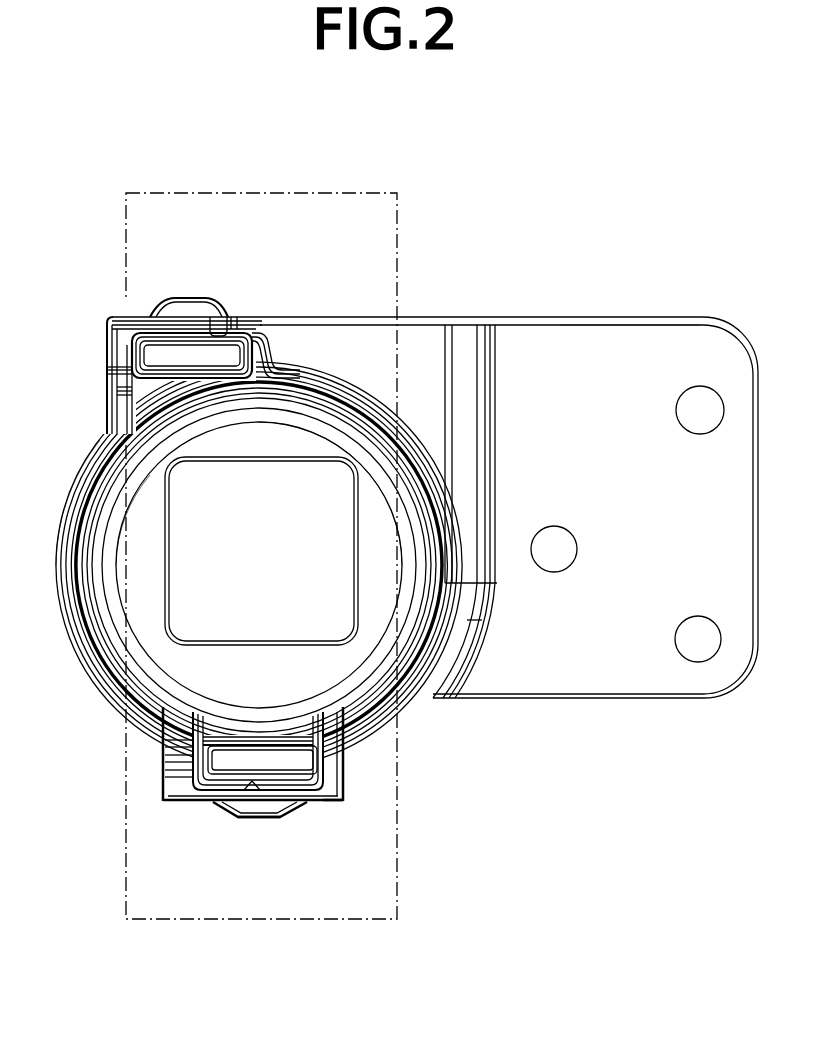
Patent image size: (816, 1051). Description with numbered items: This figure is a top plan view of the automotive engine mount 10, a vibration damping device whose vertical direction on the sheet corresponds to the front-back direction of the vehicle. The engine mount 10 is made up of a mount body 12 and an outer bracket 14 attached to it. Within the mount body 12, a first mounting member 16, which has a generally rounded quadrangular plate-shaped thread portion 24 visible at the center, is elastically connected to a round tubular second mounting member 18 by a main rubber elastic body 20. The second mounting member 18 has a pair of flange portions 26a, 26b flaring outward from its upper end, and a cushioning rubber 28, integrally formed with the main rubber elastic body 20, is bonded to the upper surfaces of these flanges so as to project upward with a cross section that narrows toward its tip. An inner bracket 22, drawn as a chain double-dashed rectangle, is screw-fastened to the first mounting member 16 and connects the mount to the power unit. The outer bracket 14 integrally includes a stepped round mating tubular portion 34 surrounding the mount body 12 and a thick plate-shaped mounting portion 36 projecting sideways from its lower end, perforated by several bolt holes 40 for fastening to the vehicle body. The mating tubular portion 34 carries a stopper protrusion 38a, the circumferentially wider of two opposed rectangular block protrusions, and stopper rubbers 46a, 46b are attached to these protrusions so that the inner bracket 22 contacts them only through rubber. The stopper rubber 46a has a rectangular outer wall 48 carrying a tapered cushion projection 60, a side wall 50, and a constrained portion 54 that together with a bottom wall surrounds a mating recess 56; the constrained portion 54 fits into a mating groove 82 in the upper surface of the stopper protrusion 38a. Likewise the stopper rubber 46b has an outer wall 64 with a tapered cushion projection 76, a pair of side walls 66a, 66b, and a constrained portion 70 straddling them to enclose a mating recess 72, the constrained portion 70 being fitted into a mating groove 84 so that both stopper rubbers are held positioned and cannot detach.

The engine mount 10 is at (590, 237).
The mount body 12 is at (72, 566).
The outer bracket 14 is at (655, 702).
The first mounting member 16 is at (313, 653).
The second mounting member 18 is at (420, 438).
The main rubber elastic body 20 is at (143, 608).
The inner bracket 22 is at (352, 222).
The thread portion 24 is at (315, 598).
The flange portion 26a is at (131, 333).
The flange portion 26b is at (342, 800).
The cushioning rubber 28 is at (173, 352).
The mating tubular portion 34 is at (70, 517).
The mounting portion 36 is at (618, 365).
The stopper protrusion 38a is at (362, 352).
The bolt hole 40 is at (688, 410).
The stopper rubber 46a is at (102, 340).
The stopper rubber 46b is at (323, 808).
The outer wall 48 is at (241, 317).
The side wall 50 is at (112, 413).
The constrained portion 54 is at (113, 374).
The mating recess 56 is at (133, 404).
The cushion projection 60 is at (182, 307).
The outer wall 64 is at (293, 798).
The side wall 66a is at (333, 770).
The side wall 66b is at (177, 782).
The constrained portion 70 is at (183, 756).
The mating recess 72 is at (250, 787).
The cushion projection 76 is at (265, 812).
The mating groove 82 is at (222, 312).
The mating groove 84 is at (180, 747).